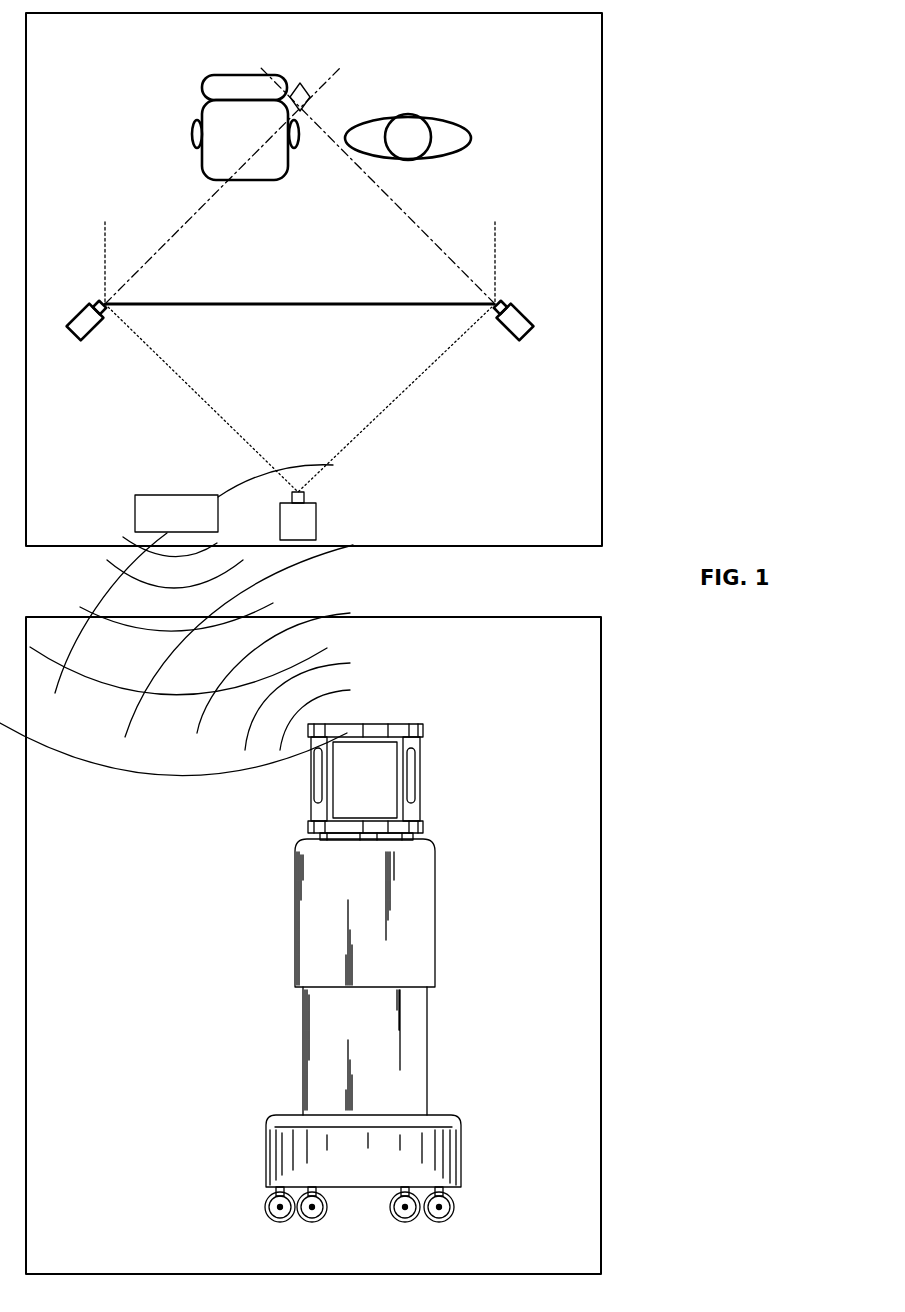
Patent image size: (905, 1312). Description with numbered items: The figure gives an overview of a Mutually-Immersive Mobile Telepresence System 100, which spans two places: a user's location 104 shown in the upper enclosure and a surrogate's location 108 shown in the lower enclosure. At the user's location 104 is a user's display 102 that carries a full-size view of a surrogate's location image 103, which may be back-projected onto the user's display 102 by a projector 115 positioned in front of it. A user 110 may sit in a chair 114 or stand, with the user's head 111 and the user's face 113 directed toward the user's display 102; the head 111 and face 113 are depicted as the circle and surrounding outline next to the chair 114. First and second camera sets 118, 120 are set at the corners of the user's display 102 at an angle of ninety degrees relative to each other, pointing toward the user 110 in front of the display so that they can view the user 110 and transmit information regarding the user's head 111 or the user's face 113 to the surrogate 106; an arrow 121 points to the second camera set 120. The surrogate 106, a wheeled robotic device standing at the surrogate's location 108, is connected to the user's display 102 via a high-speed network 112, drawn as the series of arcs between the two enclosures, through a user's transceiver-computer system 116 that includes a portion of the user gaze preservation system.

The Mutually-Immersive Mobile Telepresence System 100 is at (665, 1140).
The user's display 102 is at (440, 306).
The surrogate's location image 103 is at (322, 290).
The user's location 104 is at (314, 279).
The surrogate 106 is at (243, 970).
The surrogate's location 108 is at (313, 945).
The user 110 is at (423, 133).
The user's head 111 is at (407, 128).
The high-speed network 112 is at (297, 589).
The user's face 113 is at (412, 162).
The chair 114 is at (245, 127).
The projector 115 is at (316, 518).
The user's transceiver-computer system 116 is at (176, 513).
The first camera set 118 is at (80, 311).
The second camera set 120 is at (521, 311).
The sensor assembly 121 is at (542, 325).